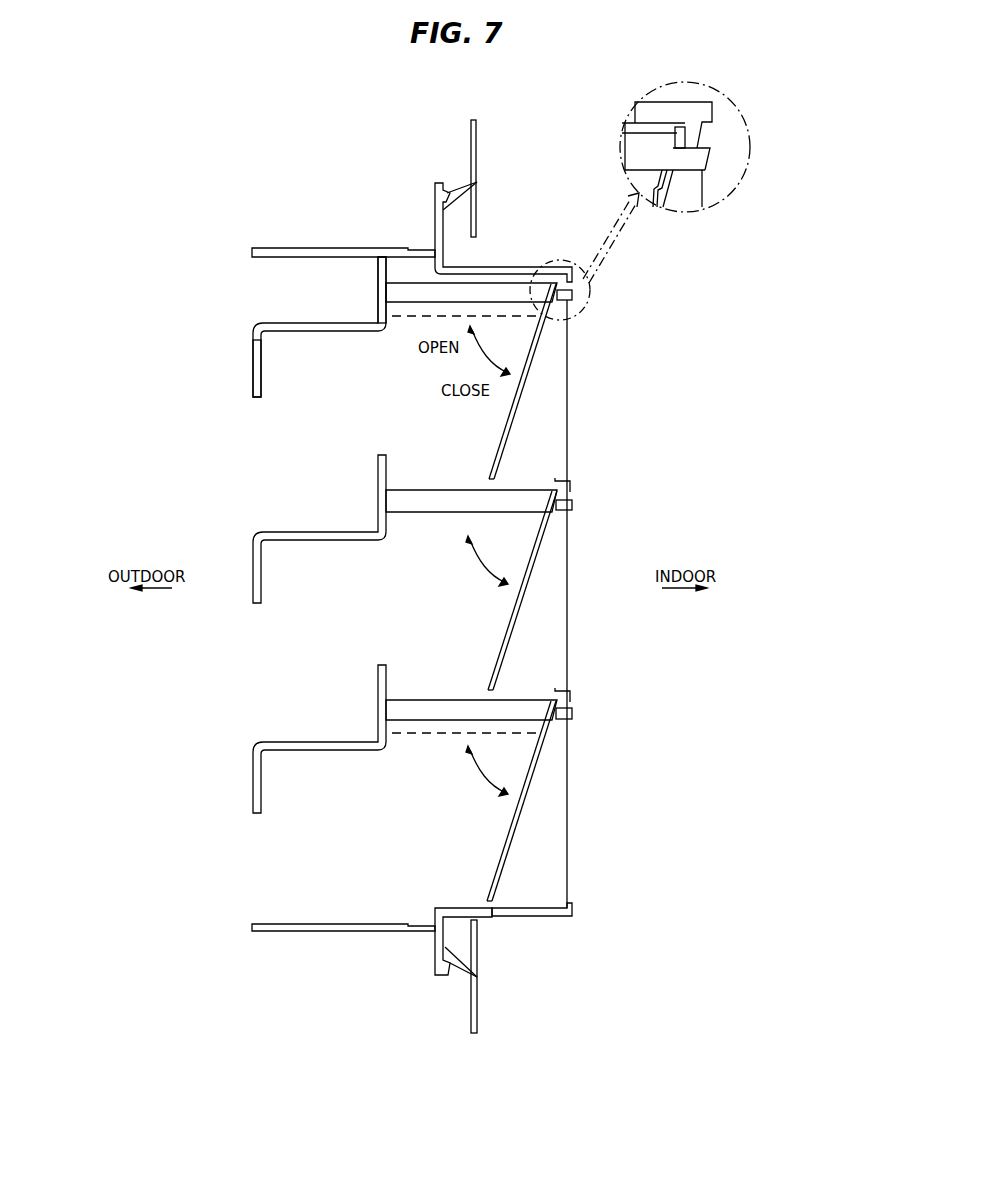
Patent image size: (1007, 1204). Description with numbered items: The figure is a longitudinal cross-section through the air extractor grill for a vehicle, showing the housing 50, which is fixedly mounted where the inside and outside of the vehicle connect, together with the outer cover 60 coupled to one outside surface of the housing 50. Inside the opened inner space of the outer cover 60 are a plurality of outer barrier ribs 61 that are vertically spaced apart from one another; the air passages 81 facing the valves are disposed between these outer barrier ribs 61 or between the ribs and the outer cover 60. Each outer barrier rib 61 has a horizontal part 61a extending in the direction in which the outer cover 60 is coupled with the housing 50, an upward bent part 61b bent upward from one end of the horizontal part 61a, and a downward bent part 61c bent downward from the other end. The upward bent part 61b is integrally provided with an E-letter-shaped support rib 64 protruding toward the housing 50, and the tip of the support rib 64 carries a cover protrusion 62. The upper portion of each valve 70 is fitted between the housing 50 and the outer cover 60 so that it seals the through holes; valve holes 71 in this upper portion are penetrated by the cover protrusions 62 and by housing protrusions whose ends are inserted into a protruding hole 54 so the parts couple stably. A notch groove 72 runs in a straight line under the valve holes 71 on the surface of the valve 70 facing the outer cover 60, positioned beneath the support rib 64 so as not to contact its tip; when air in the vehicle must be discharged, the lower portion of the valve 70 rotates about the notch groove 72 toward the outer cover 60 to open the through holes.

The housing 50 is at (537, 912).
The protruding hole 54 is at (697, 150).
The outer cover 60 is at (312, 930).
The outer barrier rib 61 is at (265, 321).
The horizontal part 61a is at (322, 328).
The upward bent part 61b is at (377, 277).
The downward bent part 61c is at (257, 368).
The cover protrusion 62 is at (565, 294).
The support rib 64 is at (513, 297).
The valve 70 is at (522, 410).
The valve hole 71 is at (673, 153).
The notch groove 72 is at (660, 190).
The air passage 81 is at (310, 440).